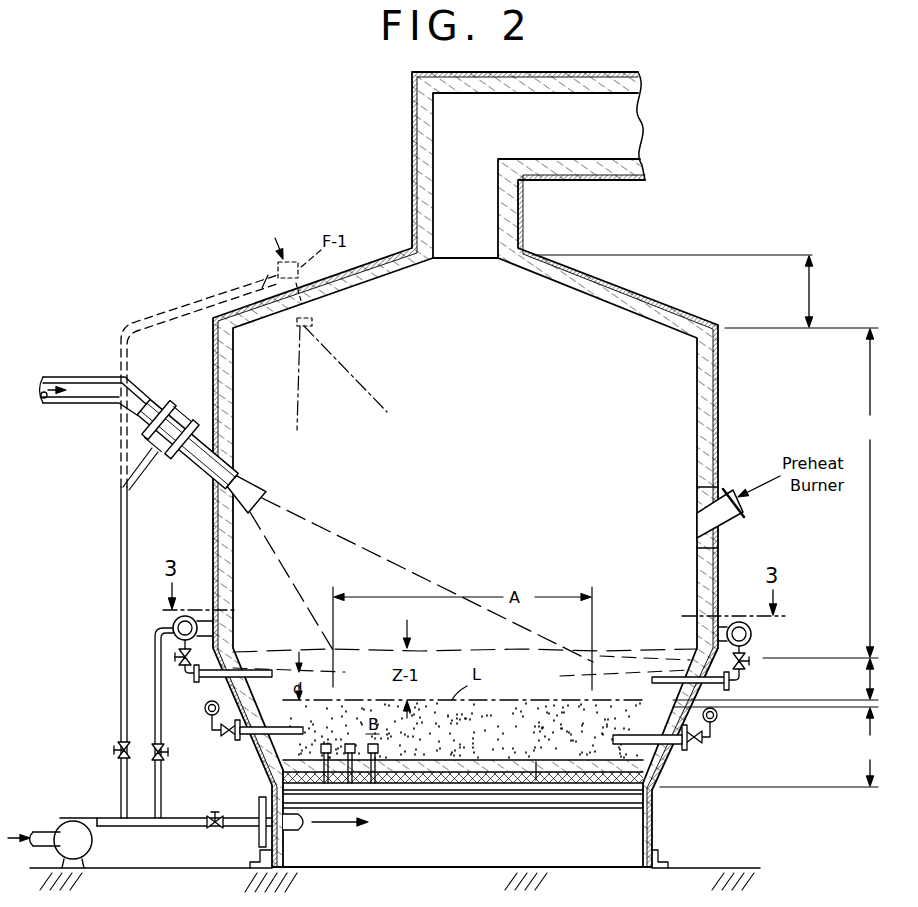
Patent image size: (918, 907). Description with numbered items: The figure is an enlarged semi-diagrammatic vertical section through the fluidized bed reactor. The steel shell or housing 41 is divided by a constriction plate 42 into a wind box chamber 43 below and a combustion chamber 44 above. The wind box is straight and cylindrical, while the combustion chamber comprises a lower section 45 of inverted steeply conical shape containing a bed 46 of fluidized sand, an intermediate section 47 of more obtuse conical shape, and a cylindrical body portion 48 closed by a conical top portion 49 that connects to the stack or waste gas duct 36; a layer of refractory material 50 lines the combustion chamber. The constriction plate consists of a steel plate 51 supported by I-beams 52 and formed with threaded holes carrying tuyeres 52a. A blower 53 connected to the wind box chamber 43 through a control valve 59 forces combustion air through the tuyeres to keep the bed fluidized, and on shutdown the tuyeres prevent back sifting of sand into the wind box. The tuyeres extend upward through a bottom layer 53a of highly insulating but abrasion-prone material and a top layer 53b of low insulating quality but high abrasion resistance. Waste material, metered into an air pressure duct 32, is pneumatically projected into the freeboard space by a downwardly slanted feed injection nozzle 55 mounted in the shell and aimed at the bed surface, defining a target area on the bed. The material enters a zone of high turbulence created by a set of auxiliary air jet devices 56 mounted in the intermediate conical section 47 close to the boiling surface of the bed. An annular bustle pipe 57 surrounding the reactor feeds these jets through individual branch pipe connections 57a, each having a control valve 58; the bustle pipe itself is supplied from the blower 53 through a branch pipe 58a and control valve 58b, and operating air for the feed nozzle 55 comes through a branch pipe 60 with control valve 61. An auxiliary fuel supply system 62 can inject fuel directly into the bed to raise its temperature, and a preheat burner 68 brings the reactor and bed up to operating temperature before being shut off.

The air pressure duct 32 is at (95, 385).
The stack or waste gas duct 36 is at (473, 224).
The steel shell or housing 41 is at (718, 450).
The constriction plate 42 is at (472, 758).
The wind box chamber 43 is at (451, 850).
The combustion chamber 44 is at (466, 539).
The lower section 45 is at (770, 747).
The bed of fluidized sand 46 is at (589, 757).
The intermediate section 47 is at (872, 680).
The cylindrical body portion 48 is at (871, 493).
The conical top portion 49 is at (705, 291).
The layer of refractory material 50 is at (232, 404).
The steel plate 51 is at (513, 786).
The I-beams 52 is at (586, 796).
The tuyeres 52a is at (380, 750).
The blower 53 is at (68, 822).
The bottom layer of insulating material 53a is at (606, 770).
The top layer 53b is at (536, 762).
The feed injection nozzle 55 is at (240, 478).
The auxiliary air jet devices 56 is at (208, 679).
The bustle pipe 57 is at (180, 620).
The branch pipe connections 57a is at (814, 690).
The control valve 58 is at (193, 656).
The branch pipe 58a is at (162, 784).
The control valve 58b is at (165, 752).
The control valve 59 is at (218, 815).
The branch pipe 60 is at (120, 660).
The control valve 61 is at (120, 748).
The auxiliary fuel supply system 62 is at (206, 715).
The preheat burner 68 is at (727, 520).